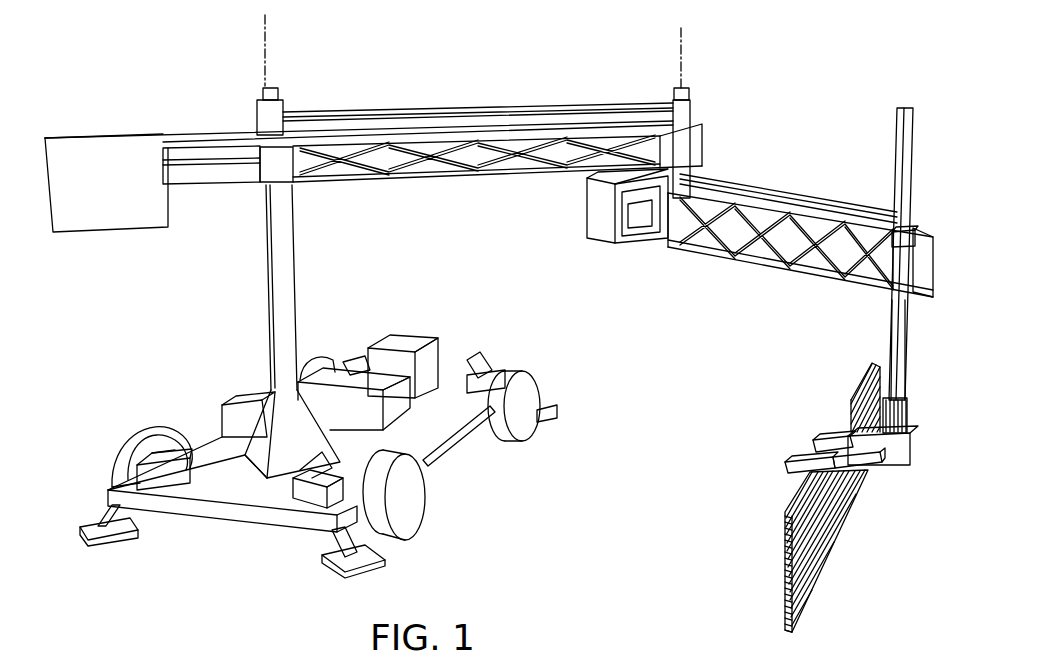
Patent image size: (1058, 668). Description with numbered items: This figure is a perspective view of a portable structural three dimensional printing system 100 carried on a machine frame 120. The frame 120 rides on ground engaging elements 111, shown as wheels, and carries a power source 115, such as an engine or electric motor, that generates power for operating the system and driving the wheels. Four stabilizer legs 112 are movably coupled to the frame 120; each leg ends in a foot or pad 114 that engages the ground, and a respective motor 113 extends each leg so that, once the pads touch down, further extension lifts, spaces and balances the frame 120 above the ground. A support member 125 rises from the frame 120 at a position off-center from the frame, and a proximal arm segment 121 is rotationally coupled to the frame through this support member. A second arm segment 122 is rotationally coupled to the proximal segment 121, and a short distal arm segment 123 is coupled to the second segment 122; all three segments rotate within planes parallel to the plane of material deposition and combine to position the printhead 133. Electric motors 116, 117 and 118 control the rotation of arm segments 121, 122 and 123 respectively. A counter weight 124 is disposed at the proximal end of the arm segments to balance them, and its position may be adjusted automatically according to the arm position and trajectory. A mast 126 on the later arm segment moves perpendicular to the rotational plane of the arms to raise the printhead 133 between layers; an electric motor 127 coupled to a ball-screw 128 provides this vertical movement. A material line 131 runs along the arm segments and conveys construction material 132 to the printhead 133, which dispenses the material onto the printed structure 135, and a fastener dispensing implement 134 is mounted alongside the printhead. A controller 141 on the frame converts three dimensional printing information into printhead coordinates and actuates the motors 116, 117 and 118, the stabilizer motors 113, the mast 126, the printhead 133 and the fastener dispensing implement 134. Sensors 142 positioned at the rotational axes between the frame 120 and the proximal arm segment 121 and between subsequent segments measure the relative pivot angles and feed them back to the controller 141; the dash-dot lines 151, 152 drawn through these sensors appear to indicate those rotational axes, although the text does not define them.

The printing system 100 is at (138, 317).
The ground engaging elements 111 is at (158, 430).
The stabilizer legs 112 is at (470, 355).
The motors 113 is at (352, 356).
The foot or pad 114 is at (560, 414).
The power source 115 is at (410, 334).
The electric motor 116 is at (197, 184).
The electric motor 117 is at (640, 224).
The electric motor 118 is at (906, 416).
The machine frame 120 is at (254, 497).
The proximal arm segment 121 is at (447, 182).
The arm segment 122 is at (743, 258).
The distal arm segment 123 is at (900, 460).
The counter weight 124 is at (152, 228).
The support member 125 is at (297, 258).
The mast 126 is at (893, 332).
The electric motor 127 is at (913, 236).
The ball-screw 128 is at (895, 172).
The material line 131 is at (441, 108).
The construction material 132 is at (397, 410).
The printhead 133 is at (790, 460).
The fastener dispensing implement 134 is at (865, 470).
The printed structure 135 is at (744, 527).
The controller 141 is at (236, 398).
The sensor 142 is at (257, 96).
The first axis 151 is at (264, 48).
The second axis 152 is at (679, 46).